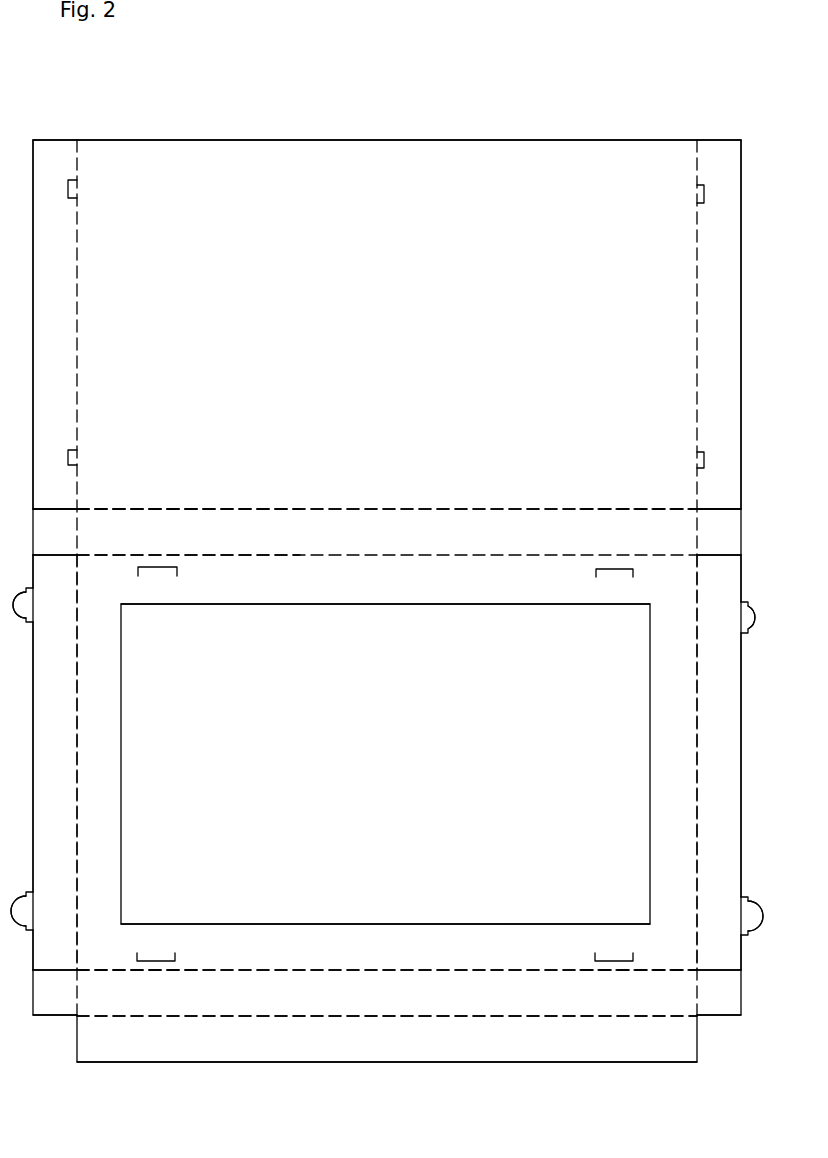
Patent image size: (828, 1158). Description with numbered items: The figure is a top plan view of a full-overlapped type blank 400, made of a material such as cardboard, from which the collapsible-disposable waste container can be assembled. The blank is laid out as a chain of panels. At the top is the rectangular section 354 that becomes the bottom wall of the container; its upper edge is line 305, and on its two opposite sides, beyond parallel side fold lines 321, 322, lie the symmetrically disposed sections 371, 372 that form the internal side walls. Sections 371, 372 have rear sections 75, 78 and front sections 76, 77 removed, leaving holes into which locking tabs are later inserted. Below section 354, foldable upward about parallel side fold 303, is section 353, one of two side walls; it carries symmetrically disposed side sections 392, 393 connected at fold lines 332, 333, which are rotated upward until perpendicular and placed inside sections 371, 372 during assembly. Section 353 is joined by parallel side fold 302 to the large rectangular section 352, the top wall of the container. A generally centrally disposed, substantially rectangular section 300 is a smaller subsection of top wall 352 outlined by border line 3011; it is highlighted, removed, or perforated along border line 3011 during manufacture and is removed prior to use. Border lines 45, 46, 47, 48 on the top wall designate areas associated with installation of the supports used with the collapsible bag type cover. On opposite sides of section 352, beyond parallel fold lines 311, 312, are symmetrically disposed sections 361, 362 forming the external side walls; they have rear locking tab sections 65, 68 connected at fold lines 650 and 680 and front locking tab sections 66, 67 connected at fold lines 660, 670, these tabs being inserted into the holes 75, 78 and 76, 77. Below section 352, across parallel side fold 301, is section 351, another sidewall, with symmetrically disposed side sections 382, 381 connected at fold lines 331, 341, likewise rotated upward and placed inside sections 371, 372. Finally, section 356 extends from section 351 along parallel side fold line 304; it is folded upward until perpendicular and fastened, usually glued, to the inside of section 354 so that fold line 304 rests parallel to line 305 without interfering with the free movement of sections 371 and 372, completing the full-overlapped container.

The FOL blank 400 is at (329, 1074).
The line 305 is at (550, 138).
The rectangular section 354 is at (160, 347).
The section 371 is at (36, 355).
The section 372 is at (702, 357).
The parallel side fold line 321 is at (76, 271).
The parallel side fold line 322 is at (698, 272).
The rear section 75 is at (78, 190).
The front section 76 is at (78, 456).
The front section 77 is at (696, 460).
The rear section 78 is at (696, 195).
The fold line 332 is at (78, 533).
The fold line 333 is at (690, 537).
The parallel side fold 303 is at (498, 509).
The side section 392 is at (38, 546).
The side section 393 is at (699, 547).
The section 353 is at (150, 545).
The parallel side fold 302 is at (387, 538).
The boarder line 45 is at (158, 568).
The boarder line 46 is at (158, 958).
The boarder line 47 is at (612, 955).
The boarder line 48 is at (600, 574).
The rear locking tab section 65 is at (26, 604).
The fold line 650 is at (36, 611).
The front locking tab section 66 is at (26, 912).
The fold line 660 is at (36, 915).
The front locking tab section 67 is at (748, 913).
The fold line 670 is at (737, 919).
The rear locking tab section 68 is at (746, 608).
The fold line 680 is at (737, 618).
The rectangular section 300 is at (143, 829).
The boarder line 3011 is at (415, 608).
The parallel fold line 311 is at (76, 748).
The parallel fold line 312 is at (698, 750).
The section 361 is at (36, 829).
The section 362 is at (702, 835).
The side section 382 is at (36, 1005).
The side section 381 is at (699, 1007).
The fold line 331 is at (78, 992).
The fold line 341 is at (690, 981).
The rectangular section 352 is at (357, 959).
The section 351 is at (354, 1004).
The parallel side fold 301 is at (518, 972).
The section 356 is at (354, 1052).
The parallel side fold line 304 is at (387, 1035).